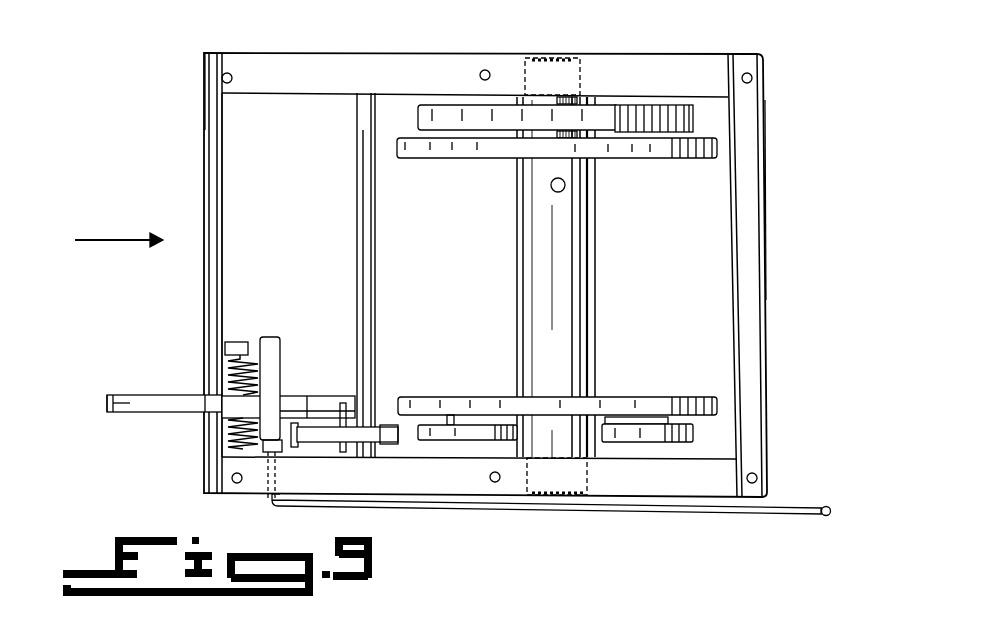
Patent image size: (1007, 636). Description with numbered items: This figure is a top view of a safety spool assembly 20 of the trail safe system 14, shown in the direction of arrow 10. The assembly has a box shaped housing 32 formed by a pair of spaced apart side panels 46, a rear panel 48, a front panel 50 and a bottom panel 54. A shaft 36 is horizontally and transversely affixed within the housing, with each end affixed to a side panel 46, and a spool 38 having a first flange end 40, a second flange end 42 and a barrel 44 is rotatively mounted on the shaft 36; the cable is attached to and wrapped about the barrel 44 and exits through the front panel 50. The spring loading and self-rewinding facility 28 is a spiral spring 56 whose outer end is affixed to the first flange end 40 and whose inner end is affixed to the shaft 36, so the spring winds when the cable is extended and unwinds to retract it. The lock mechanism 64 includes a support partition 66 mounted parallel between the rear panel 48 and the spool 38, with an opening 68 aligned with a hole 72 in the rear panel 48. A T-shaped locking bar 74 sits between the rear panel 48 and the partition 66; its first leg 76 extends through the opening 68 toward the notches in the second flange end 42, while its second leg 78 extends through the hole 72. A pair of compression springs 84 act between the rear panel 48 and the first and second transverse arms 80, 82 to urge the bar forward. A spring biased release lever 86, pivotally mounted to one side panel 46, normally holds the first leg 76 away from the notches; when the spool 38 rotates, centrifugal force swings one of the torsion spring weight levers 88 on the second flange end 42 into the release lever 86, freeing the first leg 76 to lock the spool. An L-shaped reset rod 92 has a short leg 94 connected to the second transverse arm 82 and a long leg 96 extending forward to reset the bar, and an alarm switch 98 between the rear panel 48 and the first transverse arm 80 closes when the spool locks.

The apparatus 10 is at (94, 241).
The trail safe system 14 is at (815, 148).
The safety spool assembly 20 is at (772, 213).
The spring loading and self-rewinding facility 28 is at (651, 100).
The box shaped housing 32 is at (205, 107).
The shaft 36 is at (577, 445).
The spool 38 is at (598, 311).
The first flange end 40 is at (492, 160).
The second flange end 42 is at (437, 397).
The barrel 44 is at (535, 273).
The side panel 46 is at (288, 72).
The rear panel 48 is at (212, 308).
The front panel 50 is at (757, 318).
The bottom panel 54 is at (245, 157).
The spiral spring 56 is at (420, 116).
The lock mechanism 64 is at (165, 394).
The support partition 66 is at (362, 210).
The opening 68 is at (347, 402).
The hole 72 is at (194, 414).
The T-shaped locking bar 74 is at (109, 396).
The first leg 76 is at (302, 397).
The second leg 78 is at (130, 404).
The first transverse arm 80 is at (271, 337).
The second transverse arm 82 is at (266, 453).
The compression springs 84 is at (224, 450).
The spring biased release lever 86 is at (338, 452).
The torsion spring weight levers 88 is at (507, 424).
The L-shaped reset rod 92 is at (730, 512).
The short leg 94 is at (268, 501).
The long leg 96 is at (798, 514).
The alarm switch 98 is at (237, 342).